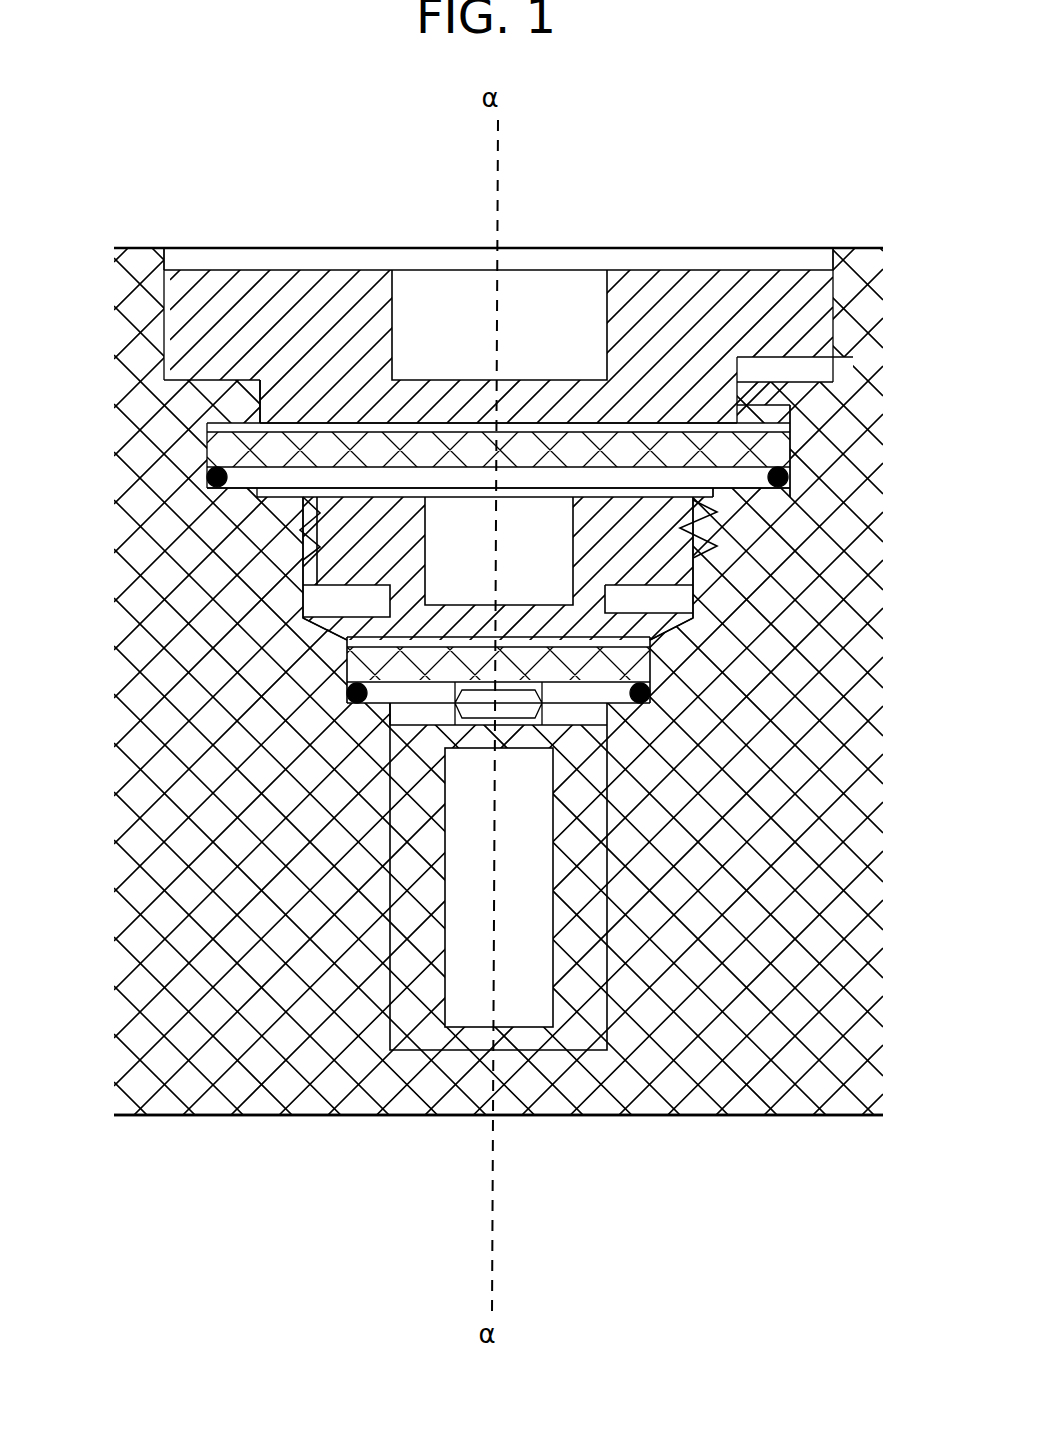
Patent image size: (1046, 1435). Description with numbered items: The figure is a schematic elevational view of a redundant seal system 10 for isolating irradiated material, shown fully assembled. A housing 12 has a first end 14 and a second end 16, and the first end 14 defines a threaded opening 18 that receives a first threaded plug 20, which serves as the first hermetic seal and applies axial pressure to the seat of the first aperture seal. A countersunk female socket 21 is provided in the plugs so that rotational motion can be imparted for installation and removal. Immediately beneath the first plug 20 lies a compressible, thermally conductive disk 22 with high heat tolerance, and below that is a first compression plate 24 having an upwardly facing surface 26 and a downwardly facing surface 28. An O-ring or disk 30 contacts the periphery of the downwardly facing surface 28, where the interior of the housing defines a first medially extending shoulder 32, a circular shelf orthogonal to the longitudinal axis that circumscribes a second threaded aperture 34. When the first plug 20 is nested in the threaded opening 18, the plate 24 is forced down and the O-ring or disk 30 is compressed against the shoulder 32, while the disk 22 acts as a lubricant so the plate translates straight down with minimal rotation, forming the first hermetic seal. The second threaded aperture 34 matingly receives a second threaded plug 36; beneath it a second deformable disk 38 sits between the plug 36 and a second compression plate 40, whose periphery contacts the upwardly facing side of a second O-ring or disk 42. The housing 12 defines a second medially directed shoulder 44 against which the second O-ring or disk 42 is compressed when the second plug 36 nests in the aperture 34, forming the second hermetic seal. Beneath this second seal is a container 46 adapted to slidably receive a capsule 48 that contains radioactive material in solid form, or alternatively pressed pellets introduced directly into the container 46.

The redundant seal system 10 is at (398, 1157).
The housing 12 is at (285, 927).
The first end 14 is at (867, 268).
The second end 16 is at (262, 1097).
The threaded opening 18 is at (163, 267).
The first threaded plug 20 is at (316, 302).
The countersunk female socket 21 is at (437, 322).
The disk 22 is at (767, 428).
The first compression plate 24 is at (230, 443).
The upwardly facing surface 26 is at (253, 433).
The downwardly facing surface 28 is at (718, 482).
The O-ring or disk 30 is at (790, 478).
The first medially extending shoulder 32 is at (255, 482).
The second threaded aperture 34 is at (693, 500).
The second threaded plug 36 is at (660, 545).
The second deformable disk 38 is at (397, 643).
The second compression plate 40 is at (618, 672).
The second O-ring or disk 42 is at (650, 698).
The second medially directed shoulder 44 is at (375, 708).
The container 46 is at (615, 1040).
The capsule 48 is at (474, 859).